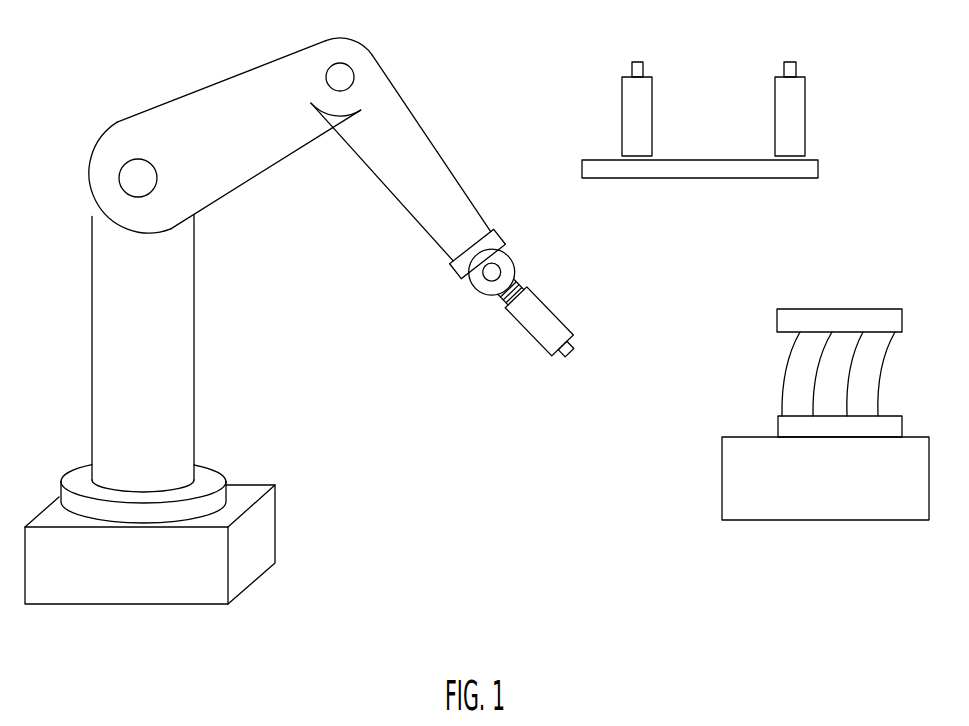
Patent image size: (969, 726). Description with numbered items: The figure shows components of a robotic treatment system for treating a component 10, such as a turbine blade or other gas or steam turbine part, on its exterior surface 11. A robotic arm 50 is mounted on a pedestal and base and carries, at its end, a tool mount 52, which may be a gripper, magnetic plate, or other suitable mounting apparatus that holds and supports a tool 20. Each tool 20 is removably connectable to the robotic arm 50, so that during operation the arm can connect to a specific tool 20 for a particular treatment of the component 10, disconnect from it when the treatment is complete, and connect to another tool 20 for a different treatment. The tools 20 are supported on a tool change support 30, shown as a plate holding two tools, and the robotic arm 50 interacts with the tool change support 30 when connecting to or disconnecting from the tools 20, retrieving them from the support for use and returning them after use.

The component 10 is at (833, 398).
The exterior surface 11 is at (797, 378).
The tool 20 is at (522, 347).
The tool change support 30 is at (731, 190).
The robotic arm 50 is at (237, 66).
The tool mount 52 is at (533, 267).